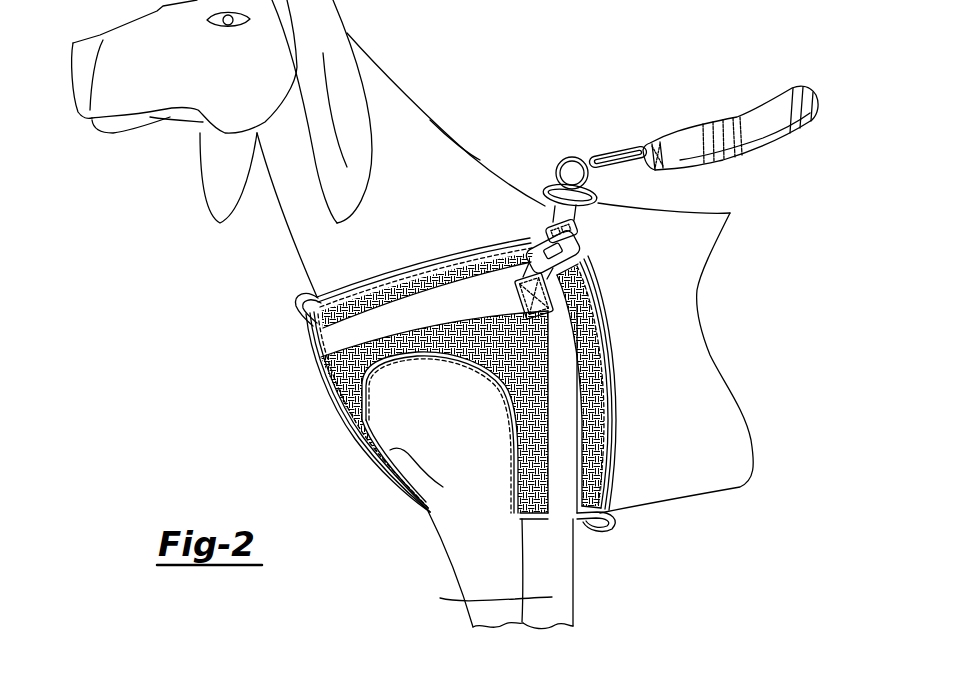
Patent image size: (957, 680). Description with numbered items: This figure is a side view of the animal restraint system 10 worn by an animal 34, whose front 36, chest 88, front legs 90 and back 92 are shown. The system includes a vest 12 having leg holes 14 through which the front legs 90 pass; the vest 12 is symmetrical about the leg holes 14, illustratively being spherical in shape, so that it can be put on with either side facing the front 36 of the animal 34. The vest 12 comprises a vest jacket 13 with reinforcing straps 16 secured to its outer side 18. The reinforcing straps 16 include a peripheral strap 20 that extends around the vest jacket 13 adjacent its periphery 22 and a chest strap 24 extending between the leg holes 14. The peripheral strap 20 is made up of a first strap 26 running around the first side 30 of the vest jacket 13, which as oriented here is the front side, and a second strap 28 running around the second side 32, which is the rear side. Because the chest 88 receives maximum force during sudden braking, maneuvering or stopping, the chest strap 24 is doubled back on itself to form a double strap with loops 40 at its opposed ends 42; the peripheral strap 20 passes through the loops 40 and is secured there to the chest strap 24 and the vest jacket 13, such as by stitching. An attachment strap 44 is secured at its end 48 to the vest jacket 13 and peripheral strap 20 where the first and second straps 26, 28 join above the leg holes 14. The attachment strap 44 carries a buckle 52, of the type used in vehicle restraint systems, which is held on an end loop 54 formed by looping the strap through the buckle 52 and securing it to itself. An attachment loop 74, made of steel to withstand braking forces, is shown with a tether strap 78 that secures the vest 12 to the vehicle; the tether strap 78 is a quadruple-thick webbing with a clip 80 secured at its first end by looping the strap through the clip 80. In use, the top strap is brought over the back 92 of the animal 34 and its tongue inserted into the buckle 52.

The animal restraint system 10 is at (727, 48).
The vest 12 is at (329, 409).
The vest jacket 13 is at (352, 375).
The leg holes 14 is at (432, 473).
The reinforcing straps 16 is at (582, 358).
The outer side 18 is at (513, 380).
The peripheral strap 20 is at (557, 498).
The periphery 22 is at (610, 424).
The chest strap 24 is at (477, 432).
The first strap 26 is at (437, 293).
The second strap 28 is at (550, 397).
The first side 30 is at (374, 273).
The second side 32 is at (646, 383).
The animal 34 is at (458, 153).
The front 36 is at (419, 314).
The loops 40 is at (304, 320).
The opposed ends 42 is at (453, 440).
The attachment strap 44 is at (568, 272).
The end 48 is at (559, 272).
The buckle 52 is at (559, 232).
The end loop 54 is at (524, 241).
The attachment loop 74 is at (559, 161).
The tether strap 78 is at (682, 131).
The clip 80 is at (604, 155).
The chest 88 is at (330, 412).
The front legs 90 is at (480, 570).
The back 92 is at (633, 208).